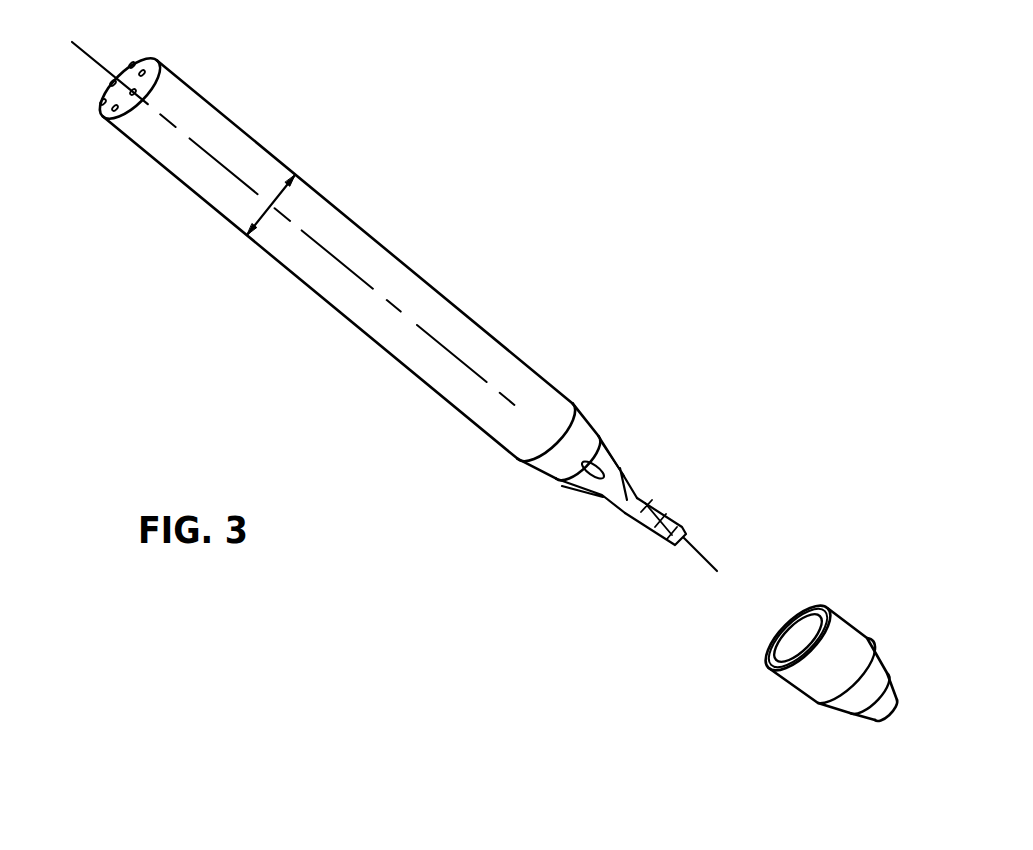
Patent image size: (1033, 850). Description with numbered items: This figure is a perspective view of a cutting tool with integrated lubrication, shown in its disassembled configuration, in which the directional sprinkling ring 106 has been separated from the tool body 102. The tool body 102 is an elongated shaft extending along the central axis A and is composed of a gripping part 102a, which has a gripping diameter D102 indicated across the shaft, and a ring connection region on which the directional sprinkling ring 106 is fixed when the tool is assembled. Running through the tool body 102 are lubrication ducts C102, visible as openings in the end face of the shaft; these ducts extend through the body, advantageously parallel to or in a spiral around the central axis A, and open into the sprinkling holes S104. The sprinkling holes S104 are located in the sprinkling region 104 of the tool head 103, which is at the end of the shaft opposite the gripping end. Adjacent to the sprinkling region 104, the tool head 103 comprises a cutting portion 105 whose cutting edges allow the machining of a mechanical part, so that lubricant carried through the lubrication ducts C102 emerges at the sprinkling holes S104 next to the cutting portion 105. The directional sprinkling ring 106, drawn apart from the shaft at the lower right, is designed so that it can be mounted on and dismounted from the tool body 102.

The central axis A is at (378, 291).
The tool body 102 is at (532, 512).
The gripping part 102a is at (399, 264).
The lubrication ducts C102 is at (132, 65).
The gripping diameter D102 is at (276, 194).
The tool head 103 is at (657, 600).
The sprinkling region 104 is at (607, 417).
The sprinkling holes S104 is at (623, 469).
The cutting portion 105 is at (663, 477).
The directional sprinkling ring 106 is at (857, 617).